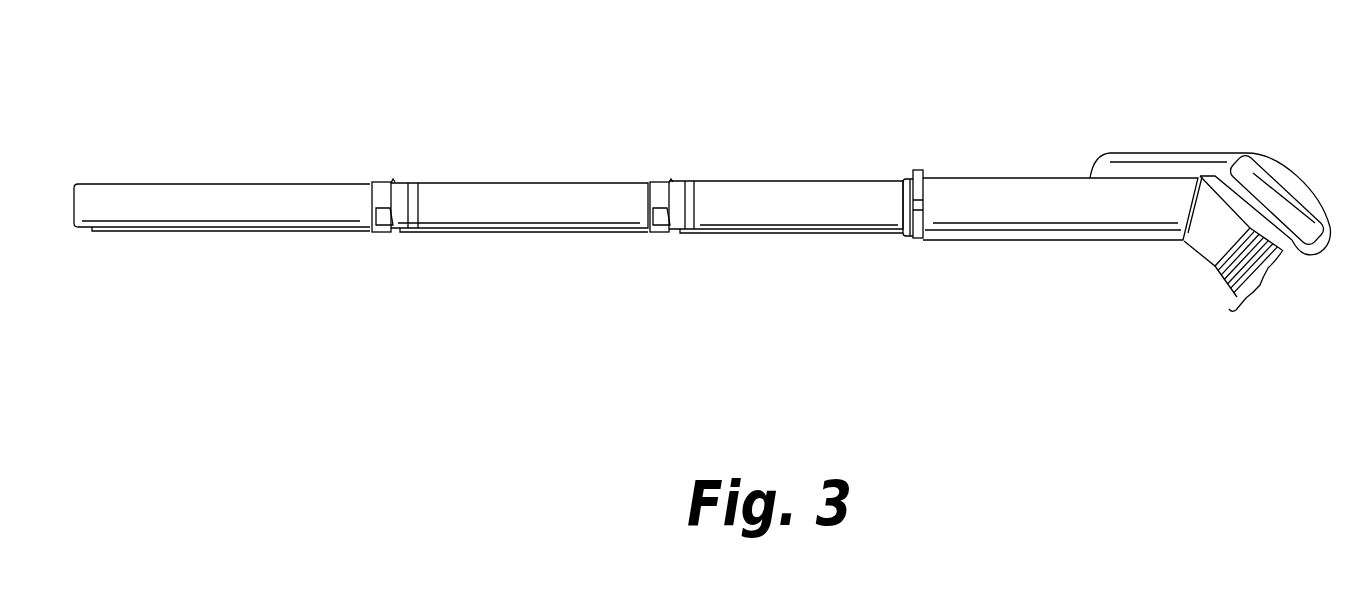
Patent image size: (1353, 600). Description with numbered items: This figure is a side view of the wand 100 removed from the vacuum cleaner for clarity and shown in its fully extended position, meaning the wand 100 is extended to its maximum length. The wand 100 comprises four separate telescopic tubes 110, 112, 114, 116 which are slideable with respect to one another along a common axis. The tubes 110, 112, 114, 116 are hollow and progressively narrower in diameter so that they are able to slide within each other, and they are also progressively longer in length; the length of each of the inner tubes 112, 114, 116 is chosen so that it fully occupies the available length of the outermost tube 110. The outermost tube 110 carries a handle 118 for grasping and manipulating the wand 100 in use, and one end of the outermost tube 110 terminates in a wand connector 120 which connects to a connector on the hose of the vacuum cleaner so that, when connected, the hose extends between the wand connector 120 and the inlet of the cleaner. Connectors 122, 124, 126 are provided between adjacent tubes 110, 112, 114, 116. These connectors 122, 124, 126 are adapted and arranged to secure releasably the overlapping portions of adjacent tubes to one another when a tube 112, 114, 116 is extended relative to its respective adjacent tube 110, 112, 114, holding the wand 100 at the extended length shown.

The wand 100 is at (425, 112).
The outermost tube 110 is at (1029, 216).
The telescopic tube 112 is at (810, 210).
The telescopic tube 114 is at (555, 215).
The telescopic tube 116 is at (282, 208).
The handle 118 is at (1233, 158).
The wand connector 120 is at (1210, 237).
The connector 122 is at (919, 222).
The connector 124 is at (657, 222).
The connector 126 is at (383, 222).